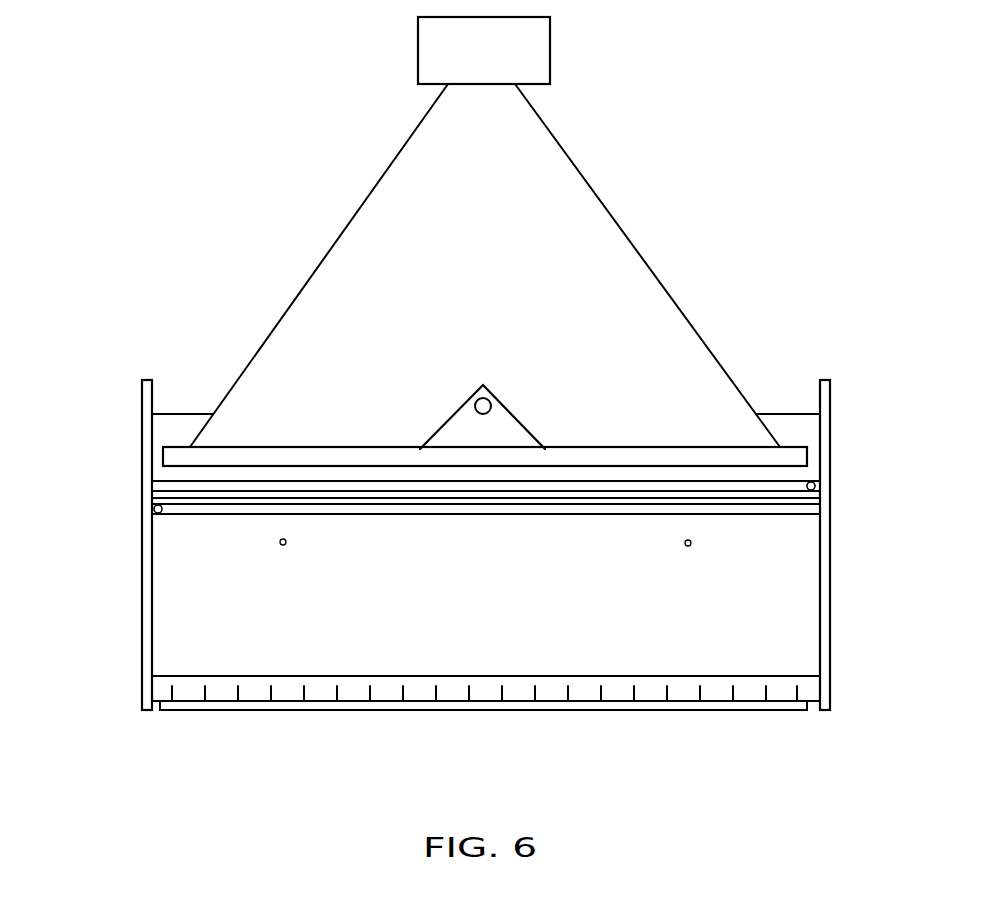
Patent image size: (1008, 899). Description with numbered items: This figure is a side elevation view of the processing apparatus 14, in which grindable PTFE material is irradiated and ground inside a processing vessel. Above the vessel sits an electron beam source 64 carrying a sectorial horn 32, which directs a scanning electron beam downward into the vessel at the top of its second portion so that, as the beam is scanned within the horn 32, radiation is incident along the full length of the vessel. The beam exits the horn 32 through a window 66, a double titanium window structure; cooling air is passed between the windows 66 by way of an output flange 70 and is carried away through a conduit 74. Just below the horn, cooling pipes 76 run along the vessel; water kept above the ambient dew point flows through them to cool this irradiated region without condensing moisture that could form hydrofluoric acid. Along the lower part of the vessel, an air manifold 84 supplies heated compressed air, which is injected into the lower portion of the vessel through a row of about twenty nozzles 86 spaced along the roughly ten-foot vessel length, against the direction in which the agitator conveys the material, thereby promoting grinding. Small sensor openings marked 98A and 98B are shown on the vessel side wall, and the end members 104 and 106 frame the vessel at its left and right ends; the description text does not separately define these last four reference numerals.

The electron beam source 64 is at (551, 53).
The processing apparatus 14 is at (757, 187).
The sectorial horn 32 is at (650, 268).
The conduit 74 is at (478, 401).
The output flange 70 is at (450, 418).
The window 66 is at (795, 461).
The cooling pipes 76 is at (808, 504).
The first sensor 98A is at (272, 543).
The second sensor 98B is at (698, 548).
The left side support 104 is at (141, 648).
The right side support 106 is at (829, 657).
The nozzle 86 is at (330, 688).
The air manifold 84 is at (418, 708).